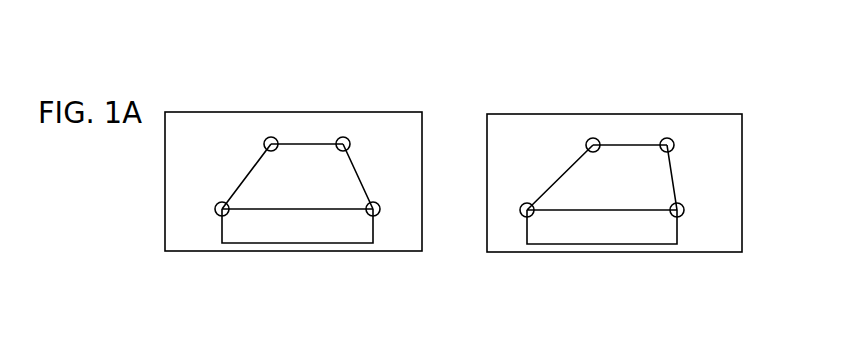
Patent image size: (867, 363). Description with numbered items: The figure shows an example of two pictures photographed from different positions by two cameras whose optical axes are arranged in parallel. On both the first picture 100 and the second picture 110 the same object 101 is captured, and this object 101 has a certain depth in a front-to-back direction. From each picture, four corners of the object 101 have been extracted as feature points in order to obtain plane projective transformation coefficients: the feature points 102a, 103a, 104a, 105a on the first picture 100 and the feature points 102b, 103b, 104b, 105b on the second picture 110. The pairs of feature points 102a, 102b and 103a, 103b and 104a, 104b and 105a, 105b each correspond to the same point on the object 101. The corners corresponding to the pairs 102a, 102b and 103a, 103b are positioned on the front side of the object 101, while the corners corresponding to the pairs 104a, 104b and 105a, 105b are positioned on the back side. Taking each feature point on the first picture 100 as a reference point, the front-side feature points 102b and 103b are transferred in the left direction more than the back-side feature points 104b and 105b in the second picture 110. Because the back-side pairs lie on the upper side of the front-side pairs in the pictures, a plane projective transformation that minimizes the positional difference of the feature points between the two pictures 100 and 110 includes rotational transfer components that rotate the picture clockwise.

The first picture 100 is at (402, 262).
The second picture 110 is at (722, 263).
The object 101 is at (342, 183).
The feature point 102a is at (217, 215).
The feature point 103a is at (378, 215).
The feature point 104a is at (268, 137).
The feature point 105a is at (344, 137).
The feature point 102b is at (522, 216).
The feature point 103b is at (681, 216).
The feature point 104b is at (590, 138).
The feature point 105b is at (668, 138).